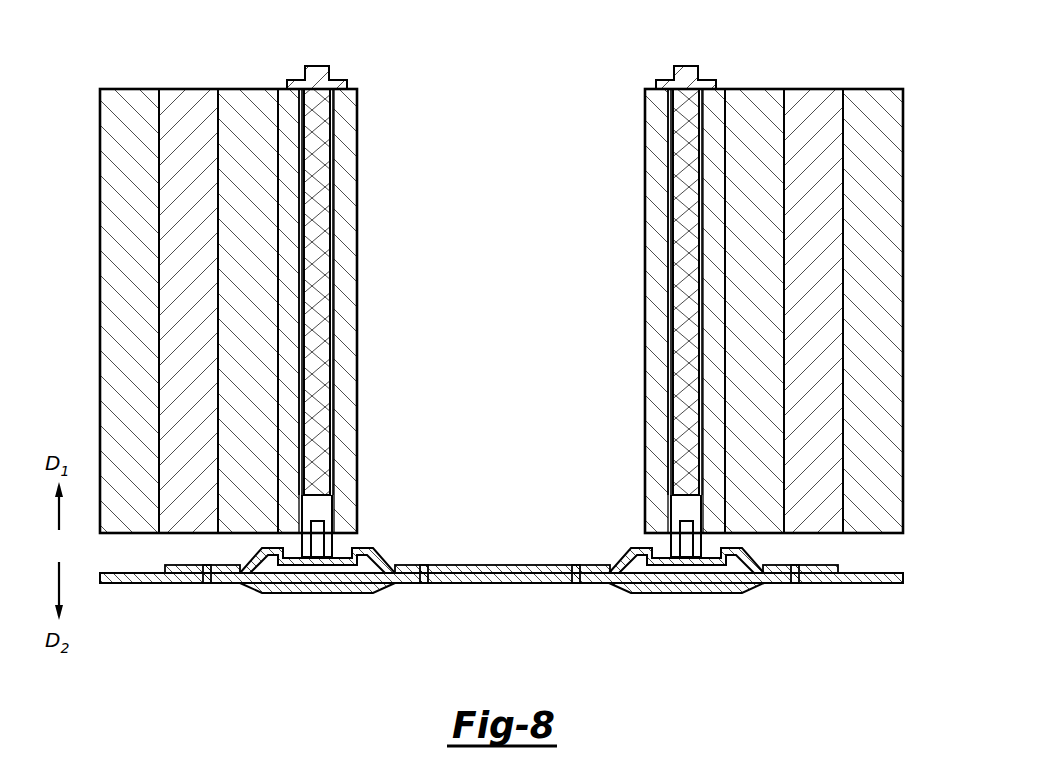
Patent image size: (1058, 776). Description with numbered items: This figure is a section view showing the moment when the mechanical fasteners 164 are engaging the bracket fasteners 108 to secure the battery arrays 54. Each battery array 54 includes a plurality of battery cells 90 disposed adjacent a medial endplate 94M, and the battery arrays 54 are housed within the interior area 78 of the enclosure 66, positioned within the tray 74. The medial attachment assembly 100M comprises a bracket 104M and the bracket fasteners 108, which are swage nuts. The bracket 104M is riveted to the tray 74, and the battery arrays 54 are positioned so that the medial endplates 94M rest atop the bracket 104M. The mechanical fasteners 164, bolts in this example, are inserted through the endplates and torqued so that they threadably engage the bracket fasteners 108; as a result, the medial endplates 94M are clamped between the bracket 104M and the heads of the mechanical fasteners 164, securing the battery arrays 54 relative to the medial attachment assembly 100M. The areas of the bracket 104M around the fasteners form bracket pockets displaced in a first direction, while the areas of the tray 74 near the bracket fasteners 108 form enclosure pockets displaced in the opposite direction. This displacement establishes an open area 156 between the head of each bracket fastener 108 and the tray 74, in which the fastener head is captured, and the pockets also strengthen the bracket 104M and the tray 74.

The battery array 54 is at (135, 135).
The battery cell 90 is at (133, 388).
The mechanical fastener 164 is at (320, 215).
The medial endplate 94M is at (340, 343).
The bracket fastener 108 is at (335, 510).
The interior area 78 is at (513, 415).
The enclosure 66 is at (132, 577).
The bracket 104M is at (218, 570).
The tray 74 is at (316, 592).
The open area 156 is at (340, 572).
The medial attachment assembly 100M is at (520, 523).